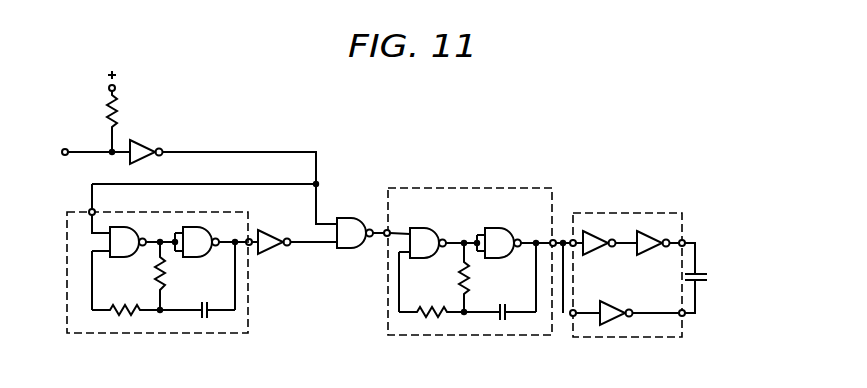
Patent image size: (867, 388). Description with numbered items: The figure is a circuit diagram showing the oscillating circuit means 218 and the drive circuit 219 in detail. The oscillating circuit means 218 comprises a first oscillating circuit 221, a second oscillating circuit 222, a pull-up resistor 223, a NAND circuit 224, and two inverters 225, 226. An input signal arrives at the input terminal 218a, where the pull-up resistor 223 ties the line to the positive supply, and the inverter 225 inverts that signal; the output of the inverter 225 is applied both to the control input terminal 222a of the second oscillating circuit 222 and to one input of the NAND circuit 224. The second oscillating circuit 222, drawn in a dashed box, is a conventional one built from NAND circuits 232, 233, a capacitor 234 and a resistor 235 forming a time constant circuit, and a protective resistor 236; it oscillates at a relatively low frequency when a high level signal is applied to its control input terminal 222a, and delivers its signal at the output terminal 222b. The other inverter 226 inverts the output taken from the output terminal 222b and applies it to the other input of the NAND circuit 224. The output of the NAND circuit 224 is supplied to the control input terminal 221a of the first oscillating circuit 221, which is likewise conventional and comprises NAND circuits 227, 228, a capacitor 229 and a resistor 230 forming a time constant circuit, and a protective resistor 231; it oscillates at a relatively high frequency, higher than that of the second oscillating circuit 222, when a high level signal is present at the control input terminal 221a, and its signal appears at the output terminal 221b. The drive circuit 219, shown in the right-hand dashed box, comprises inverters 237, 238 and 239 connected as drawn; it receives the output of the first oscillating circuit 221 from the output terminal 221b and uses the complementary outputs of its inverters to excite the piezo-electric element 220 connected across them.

The oscillating circuit means 218 is at (418, 143).
The input terminal 218a is at (85, 134).
The drive circuit 219 is at (620, 213).
The piezo-electric element 220 is at (695, 272).
The first oscillating circuit 221 is at (463, 187).
The control input terminal 221a is at (385, 230).
The output terminal 221b is at (554, 240).
The second oscillating circuit 222 is at (158, 334).
The control input terminal 222a is at (90, 209).
The output terminal 222b is at (250, 239).
The pull-up resistor 223 is at (118, 105).
The NAND circuit 224 is at (350, 249).
The inverter 225 is at (150, 140).
The inverter 226 is at (272, 256).
The NAND circuit 227 is at (422, 228).
The NAND circuit 228 is at (500, 228).
The capacitor 229 is at (506, 322).
The resistor 230 is at (470, 278).
The protective resistor 231 is at (428, 320).
The NAND circuit 232 is at (122, 256).
The NAND circuit 233 is at (213, 256).
The capacitor 234 is at (210, 320).
The resistor 235 is at (163, 280).
The protective resistor 236 is at (124, 318).
The inverter 237 is at (594, 257).
The inverter 238 is at (649, 257).
The inverter 239 is at (612, 327).